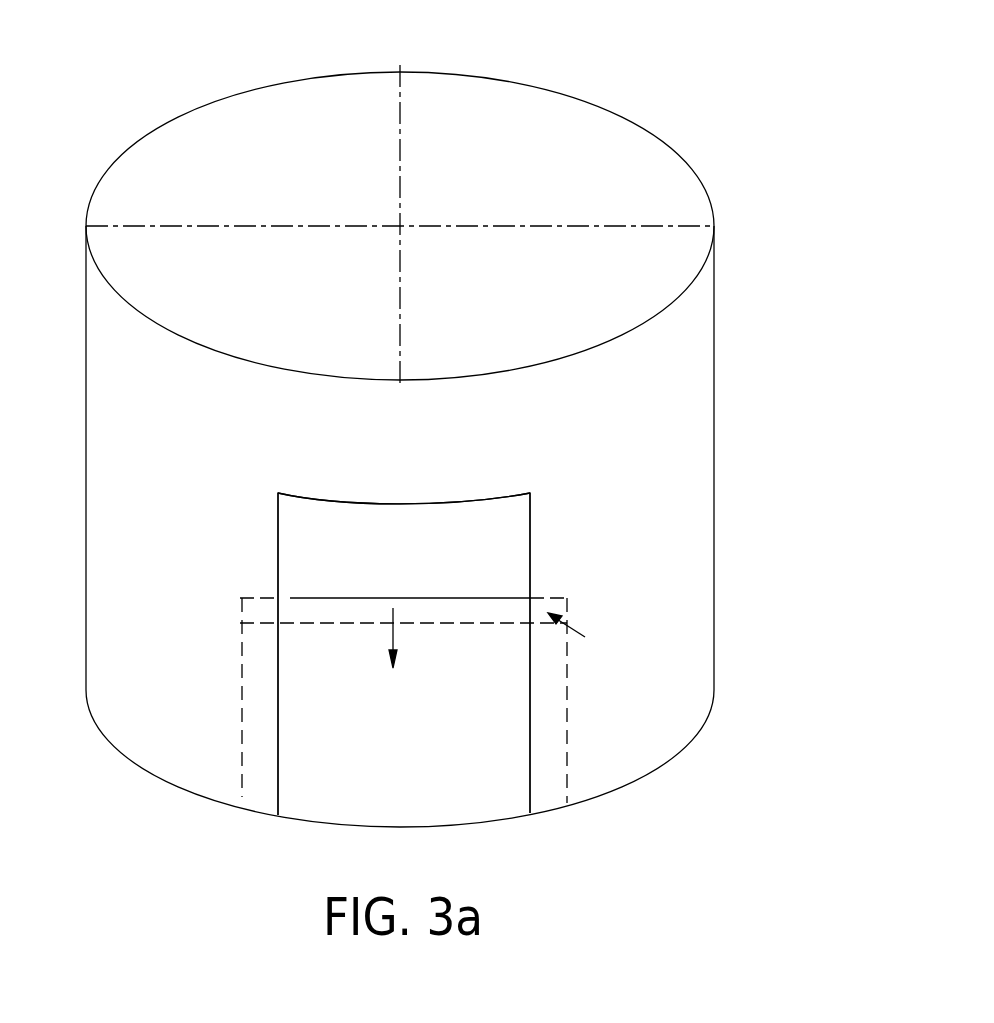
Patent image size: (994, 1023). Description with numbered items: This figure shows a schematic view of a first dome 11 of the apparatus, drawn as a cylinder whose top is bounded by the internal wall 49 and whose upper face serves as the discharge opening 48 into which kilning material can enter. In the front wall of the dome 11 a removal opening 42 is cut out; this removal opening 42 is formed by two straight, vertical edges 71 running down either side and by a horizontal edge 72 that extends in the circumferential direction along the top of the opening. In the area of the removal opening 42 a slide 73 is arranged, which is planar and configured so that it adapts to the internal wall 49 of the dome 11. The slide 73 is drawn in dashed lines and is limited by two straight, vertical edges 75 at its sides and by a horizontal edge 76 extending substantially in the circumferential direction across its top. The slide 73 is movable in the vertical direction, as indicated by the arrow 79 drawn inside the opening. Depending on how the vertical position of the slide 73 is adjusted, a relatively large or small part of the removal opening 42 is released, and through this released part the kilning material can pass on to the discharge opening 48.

The first dome 11 is at (628, 52).
The discharge opening 48 is at (263, 120).
The internal wall 49 is at (651, 172).
The removal opening 42 is at (528, 536).
The horizontal edge 72 is at (348, 500).
The vertical edges 71 is at (278, 553).
The horizontal edge 76 is at (444, 599).
The arrow 79 is at (417, 643).
The slide 73 is at (556, 723).
The vertical edges 75 is at (243, 700).